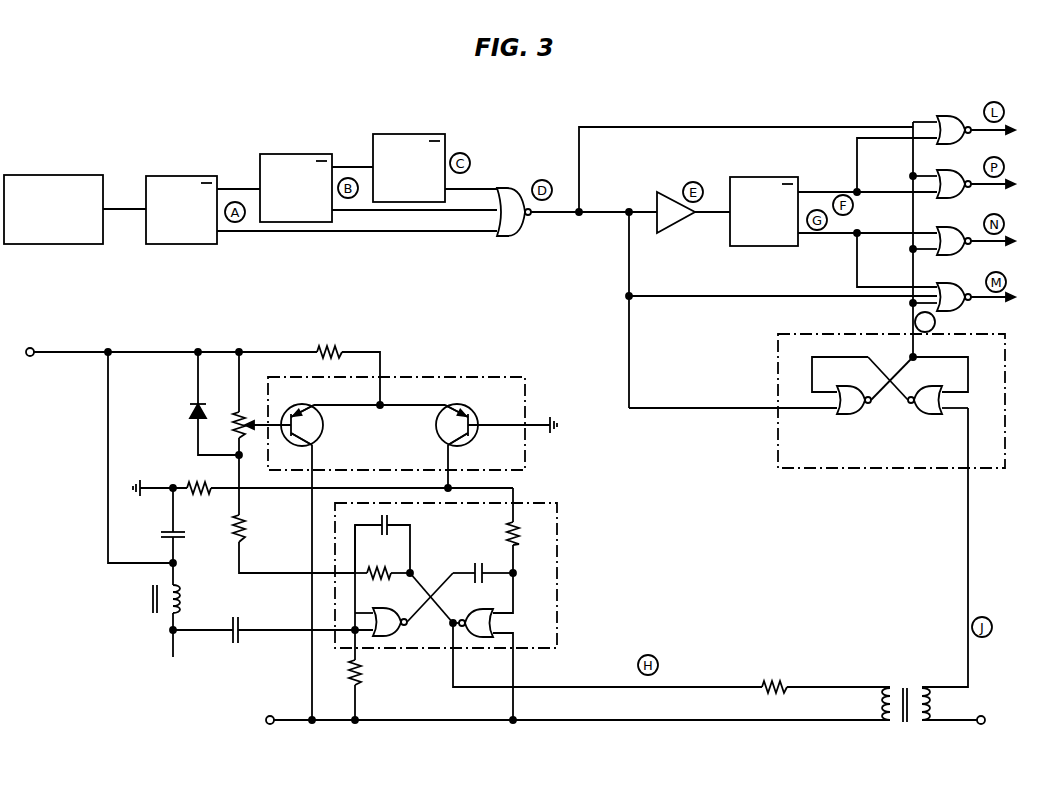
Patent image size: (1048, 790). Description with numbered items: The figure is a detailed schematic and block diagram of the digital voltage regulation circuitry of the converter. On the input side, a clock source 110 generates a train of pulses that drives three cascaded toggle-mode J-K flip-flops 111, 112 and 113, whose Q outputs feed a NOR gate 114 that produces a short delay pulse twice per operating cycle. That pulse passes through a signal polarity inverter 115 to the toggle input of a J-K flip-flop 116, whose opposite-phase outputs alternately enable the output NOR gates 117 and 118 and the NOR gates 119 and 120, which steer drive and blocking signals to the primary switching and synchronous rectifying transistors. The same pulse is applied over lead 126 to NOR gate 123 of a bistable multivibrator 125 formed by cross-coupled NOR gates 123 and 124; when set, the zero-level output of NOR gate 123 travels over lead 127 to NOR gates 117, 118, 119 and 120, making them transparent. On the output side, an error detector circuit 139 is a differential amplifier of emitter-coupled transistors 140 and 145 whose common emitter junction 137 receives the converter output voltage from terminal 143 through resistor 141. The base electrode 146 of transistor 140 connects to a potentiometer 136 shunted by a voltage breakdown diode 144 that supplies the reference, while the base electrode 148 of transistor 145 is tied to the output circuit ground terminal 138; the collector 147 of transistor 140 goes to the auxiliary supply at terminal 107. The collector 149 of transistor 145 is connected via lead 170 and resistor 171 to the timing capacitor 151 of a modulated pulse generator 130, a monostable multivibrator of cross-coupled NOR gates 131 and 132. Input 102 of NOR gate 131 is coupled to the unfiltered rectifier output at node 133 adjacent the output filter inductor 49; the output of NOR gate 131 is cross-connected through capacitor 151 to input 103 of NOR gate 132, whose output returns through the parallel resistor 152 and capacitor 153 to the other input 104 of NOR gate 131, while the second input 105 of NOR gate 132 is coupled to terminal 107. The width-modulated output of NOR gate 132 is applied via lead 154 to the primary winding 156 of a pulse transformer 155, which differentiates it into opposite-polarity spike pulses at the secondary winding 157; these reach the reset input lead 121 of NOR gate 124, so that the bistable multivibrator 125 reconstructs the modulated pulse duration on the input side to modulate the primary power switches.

The clock source 110 is at (65, 175).
The J-K flip-flop 111 is at (188, 176).
The J-K flip-flop 112 is at (305, 154).
The J-K flip-flop 113 is at (415, 134).
The NOR gate 114 is at (513, 203).
The signal polarity inverter 115 is at (681, 215).
The J-K flip-flop 116 is at (772, 177).
The NOR gate 117 is at (976, 122).
The NOR gate 118 is at (976, 177).
The NOR gate 119 is at (976, 234).
The NOR gate 120 is at (976, 288).
The reset input lead 121 is at (968, 560).
The NOR gate 123 is at (852, 391).
The NOR gate 124 is at (928, 391).
The bistable multivibrator 125 is at (891, 401).
The lead 126 is at (629, 373).
The lead 127 is at (915, 324).
The modulated pulse generator 130 is at (557, 525).
The NOR gate 131 is at (386, 630).
The NOR gate 132 is at (471, 616).
The node 133 is at (171, 634).
The potentiometer 136 is at (246, 420).
The common emitter junction 137 is at (378, 404).
The output circuit ground terminal 138 is at (547, 416).
The error detector circuit 139 is at (430, 377).
The transistor 140 is at (323, 428).
The resistor 141 is at (328, 341).
The terminal 143 is at (166, 342).
The voltage breakdown diode 144 is at (197, 403).
The transistor 145 is at (478, 441).
The base electrode 146 is at (294, 414).
The collector 147 is at (316, 446).
The base electrode 148 is at (475, 408).
The collector 149 is at (443, 441).
The capacitor 151 is at (480, 565).
The resistor 152 is at (382, 563).
The capacitor 153 is at (399, 521).
The lead 154 is at (820, 687).
The pulse transformer 155 is at (915, 718).
The primary winding 156 is at (868, 704).
The secondary winding 157 is at (953, 706).
The lead 170 is at (458, 488).
The resistor 171 is at (526, 516).
The output filter inductor 49 is at (180, 599).
The input 102 is at (283, 638).
The input 103 is at (515, 584).
The input 104 is at (356, 600).
The second input 105 is at (517, 687).
The terminal 107 is at (564, 720).